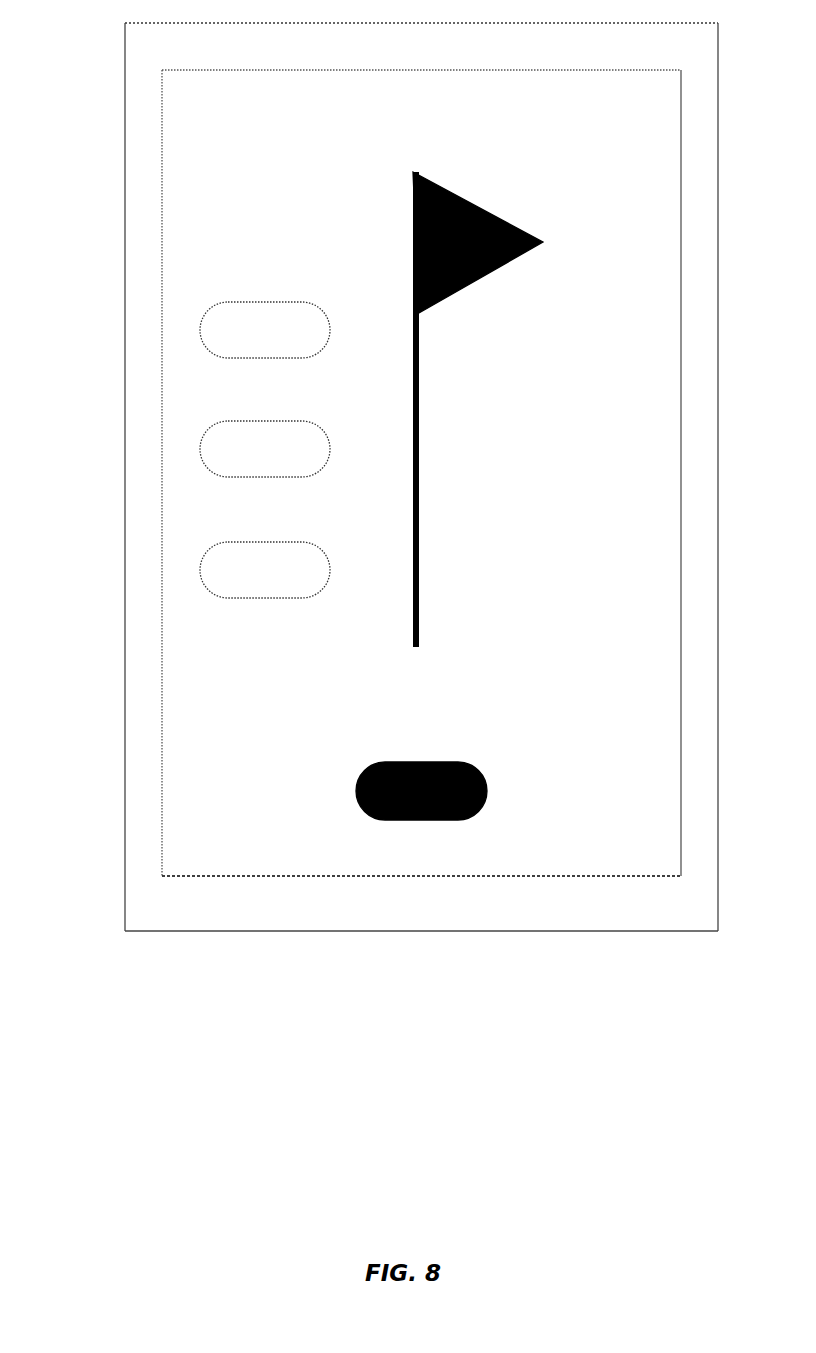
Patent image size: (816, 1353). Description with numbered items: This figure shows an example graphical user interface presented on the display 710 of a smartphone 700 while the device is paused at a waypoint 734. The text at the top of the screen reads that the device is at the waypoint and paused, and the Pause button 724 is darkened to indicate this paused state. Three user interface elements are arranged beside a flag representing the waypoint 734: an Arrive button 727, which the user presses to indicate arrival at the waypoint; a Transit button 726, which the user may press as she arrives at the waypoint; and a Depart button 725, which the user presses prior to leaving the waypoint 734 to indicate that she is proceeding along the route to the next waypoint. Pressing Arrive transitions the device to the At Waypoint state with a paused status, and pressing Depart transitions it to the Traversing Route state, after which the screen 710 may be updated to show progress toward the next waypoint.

The smartphone 700 is at (124, 477).
The display 710 is at (435, 718).
The waypoint 734 is at (413, 220).
The Arrive button 727 is at (331, 330).
The Transit button 726 is at (331, 450).
The Depart button 725 is at (331, 570).
The Pause button 724 is at (355, 787).